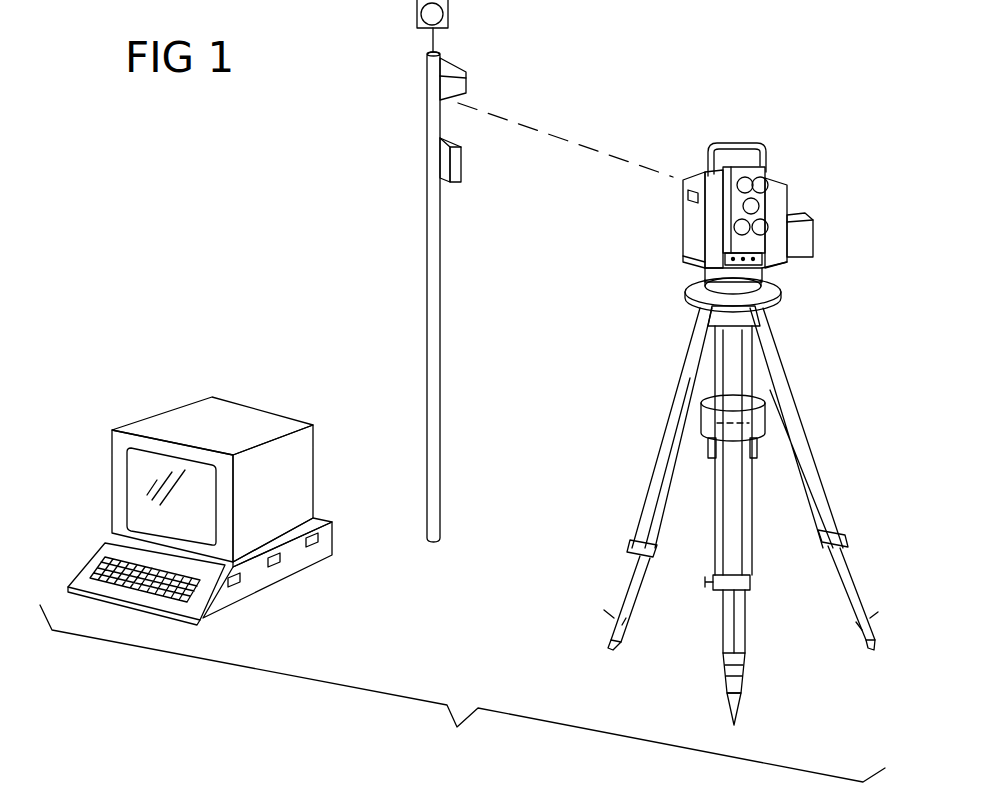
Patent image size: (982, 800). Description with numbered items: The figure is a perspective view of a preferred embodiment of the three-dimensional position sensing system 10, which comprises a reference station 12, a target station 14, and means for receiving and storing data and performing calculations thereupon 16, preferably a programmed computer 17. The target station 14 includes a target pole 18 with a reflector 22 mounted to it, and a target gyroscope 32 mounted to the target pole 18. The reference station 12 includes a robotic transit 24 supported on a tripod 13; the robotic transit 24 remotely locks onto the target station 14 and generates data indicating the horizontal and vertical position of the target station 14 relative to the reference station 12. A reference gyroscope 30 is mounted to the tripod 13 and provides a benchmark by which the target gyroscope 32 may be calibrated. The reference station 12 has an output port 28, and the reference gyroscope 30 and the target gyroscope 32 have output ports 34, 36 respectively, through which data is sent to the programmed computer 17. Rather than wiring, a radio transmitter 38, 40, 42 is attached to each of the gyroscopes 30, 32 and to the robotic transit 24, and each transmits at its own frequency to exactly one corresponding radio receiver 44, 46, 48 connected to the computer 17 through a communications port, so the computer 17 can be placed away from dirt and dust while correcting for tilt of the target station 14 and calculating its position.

The three-dimensional position sensing system 10 is at (710, 80).
The reference station 12 is at (792, 360).
The tripod 13 is at (695, 350).
The target station 14 is at (416, 393).
The means for receiving and storing data and performing calculations thereupon 16 is at (162, 396).
The programmed computer 17 is at (272, 413).
The target pole 18 is at (427, 322).
The reflector 22 is at (400, 40).
The robotic transit 24 is at (683, 238).
The output port 28 is at (795, 215).
The reference gyroscope 30 is at (762, 426).
The target gyroscope 32 is at (482, 143).
The output port 34 is at (757, 440).
The output port 36 is at (465, 158).
The radio transmitter 38 is at (708, 445).
The radio transmitter 40 is at (466, 78).
The radio transmitter 42 is at (800, 240).
The radio receiver 44 is at (242, 580).
The radio receiver 46 is at (282, 558).
The radio receiver 48 is at (330, 525).